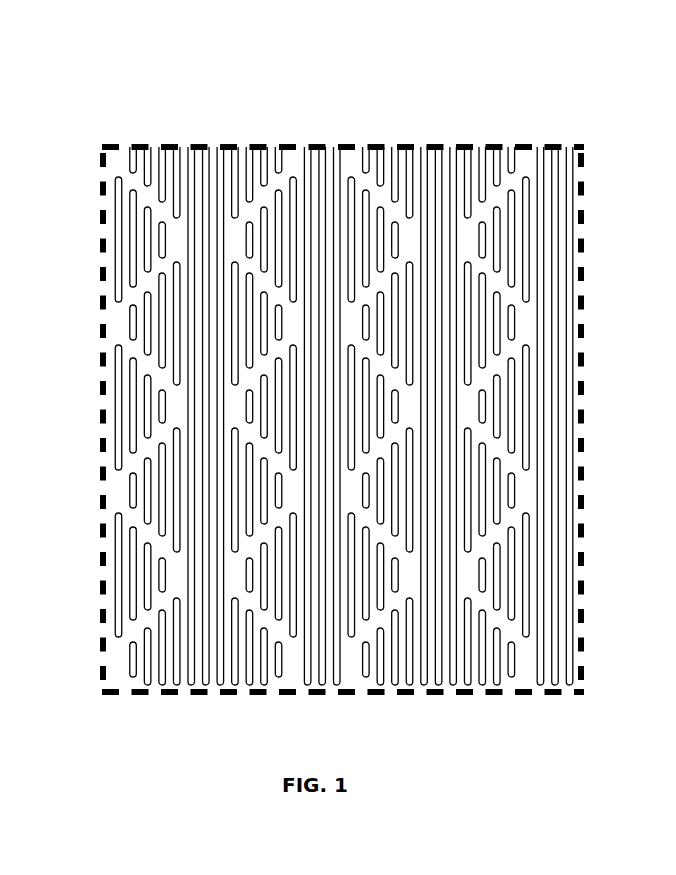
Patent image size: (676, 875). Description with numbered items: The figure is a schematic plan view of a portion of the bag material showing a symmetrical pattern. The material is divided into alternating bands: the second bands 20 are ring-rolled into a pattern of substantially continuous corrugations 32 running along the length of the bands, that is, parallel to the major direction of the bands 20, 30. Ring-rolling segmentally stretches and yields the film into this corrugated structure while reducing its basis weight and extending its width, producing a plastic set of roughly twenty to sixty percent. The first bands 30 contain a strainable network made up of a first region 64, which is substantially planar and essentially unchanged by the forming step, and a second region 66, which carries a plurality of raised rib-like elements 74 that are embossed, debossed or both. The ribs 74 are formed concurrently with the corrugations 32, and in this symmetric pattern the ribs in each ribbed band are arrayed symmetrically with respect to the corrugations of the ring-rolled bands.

The second bands 20 is at (201, 158).
The first bands 30 is at (124, 143).
The corrugations 32 is at (190, 667).
The first region 64 is at (127, 168).
The second region 66 is at (118, 243).
The rib-like elements 74 is at (118, 277).